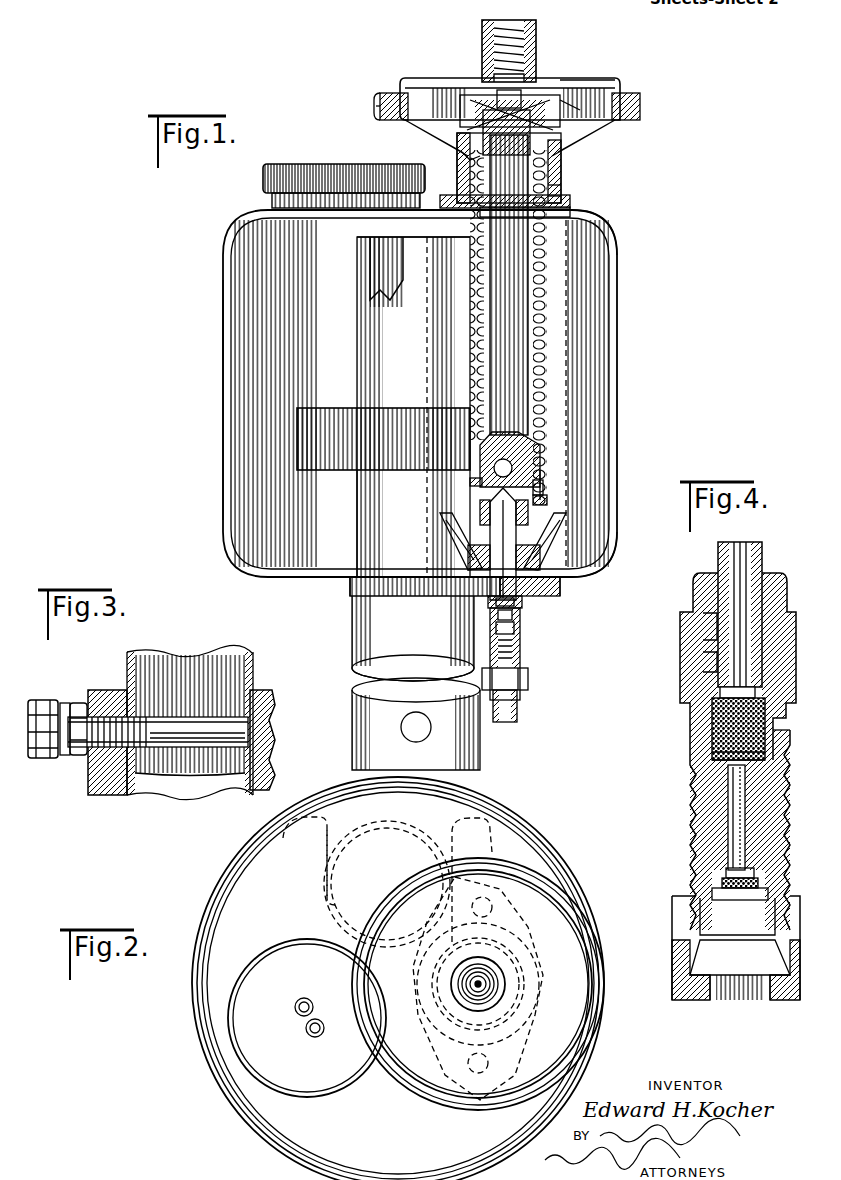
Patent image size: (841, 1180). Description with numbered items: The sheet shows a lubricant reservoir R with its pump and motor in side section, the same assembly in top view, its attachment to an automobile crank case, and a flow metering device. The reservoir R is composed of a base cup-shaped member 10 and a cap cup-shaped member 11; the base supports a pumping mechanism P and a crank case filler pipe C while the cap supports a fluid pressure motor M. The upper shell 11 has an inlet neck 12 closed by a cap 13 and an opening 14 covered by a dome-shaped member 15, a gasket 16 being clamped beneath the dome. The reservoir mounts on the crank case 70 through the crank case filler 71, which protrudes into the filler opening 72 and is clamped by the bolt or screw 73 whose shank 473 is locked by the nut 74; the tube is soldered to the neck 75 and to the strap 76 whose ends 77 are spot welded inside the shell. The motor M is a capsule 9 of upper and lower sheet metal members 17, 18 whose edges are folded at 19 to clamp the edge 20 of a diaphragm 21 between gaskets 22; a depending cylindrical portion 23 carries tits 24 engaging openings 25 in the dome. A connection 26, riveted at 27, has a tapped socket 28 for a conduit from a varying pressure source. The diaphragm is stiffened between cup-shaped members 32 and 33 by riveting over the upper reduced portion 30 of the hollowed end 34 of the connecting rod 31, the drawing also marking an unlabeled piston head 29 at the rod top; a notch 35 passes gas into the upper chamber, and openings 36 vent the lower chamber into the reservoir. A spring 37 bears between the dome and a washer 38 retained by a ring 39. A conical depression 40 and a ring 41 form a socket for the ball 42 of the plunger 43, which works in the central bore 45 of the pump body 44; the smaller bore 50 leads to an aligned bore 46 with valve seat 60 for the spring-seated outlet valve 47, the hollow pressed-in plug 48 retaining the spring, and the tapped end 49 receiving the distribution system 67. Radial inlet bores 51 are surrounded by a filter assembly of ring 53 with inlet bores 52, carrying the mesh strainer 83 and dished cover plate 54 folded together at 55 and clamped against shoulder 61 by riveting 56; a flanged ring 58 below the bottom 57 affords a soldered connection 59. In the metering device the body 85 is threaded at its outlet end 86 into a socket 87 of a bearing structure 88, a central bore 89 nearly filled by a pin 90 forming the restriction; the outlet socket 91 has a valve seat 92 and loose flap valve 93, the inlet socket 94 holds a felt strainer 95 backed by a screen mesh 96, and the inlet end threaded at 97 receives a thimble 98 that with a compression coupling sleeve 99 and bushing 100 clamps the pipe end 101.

In FIG. 1, the capsule 9 is at (642, 112).
In FIG. 1, the base cup-shaped member 10 is at (222, 492).
In FIG. 1, the cap cup-shaped member 11 is at (228, 270).
In FIG. 1, the inlet neck 12 is at (272, 198).
In FIG. 1, the cap 13 is at (312, 166).
In FIG. 2, the cap 13 is at (245, 1043).
In FIG. 1, the opening 14 is at (586, 222).
In FIG. 1, the dome-shaped member 15 is at (572, 204).
In FIG. 1, the gasket 16 is at (462, 212).
In FIG. 1, the upper sheet metal member 17 is at (600, 102).
In FIG. 2, the upper sheet metal member 17 is at (547, 930).
In FIG. 1, the lower sheet metal member 18 is at (592, 134).
In FIG. 1, the folded edges 19 is at (392, 92).
In FIG. 1, the diaphragm edge 20 is at (380, 106).
In FIG. 1, the diaphragm 21 is at (448, 100).
In FIG. 1, the gaskets 22 is at (384, 98).
In FIG. 1, the depending cylindrical portion 23 is at (566, 197).
In FIG. 1, the tits 24 is at (563, 170).
In FIG. 1, the openings 25 is at (563, 185).
In FIG. 1, the connection 26 is at (482, 48).
In FIG. 2, the connection 26 is at (490, 1003).
In FIG. 1, the riveting 27 is at (530, 120).
In FIG. 1, the tapped socket 28 is at (482, 29).
In FIG. 1, the piston head 29 is at (510, 150).
In FIG. 1, the upper reduced portion 30 is at (560, 116).
In FIG. 1, the connecting rod 31 is at (500, 296).
In FIG. 1, the upwardly facing cup-shaped member 32 is at (438, 122).
In FIG. 1, the downwardly facing cup-shaped member 33 is at (468, 142).
In FIG. 1, the hollowed end 34 is at (536, 122).
In FIG. 1, the notch 35 is at (500, 108).
In FIG. 1, the openings 36 is at (468, 160).
In FIG. 1, the spring 37 is at (476, 346).
In FIG. 1, the washer 38 is at (546, 500).
In FIG. 1, the ring 39 is at (532, 504).
In FIG. 1, the conical depression 40 is at (512, 467).
In FIG. 1, the ring 41 is at (480, 481).
In FIG. 1, the ball 42 is at (522, 450).
In FIG. 1, the plunger 43 is at (492, 500).
In FIG. 1, the pump body 44 is at (542, 556).
In FIG. 1, the central bore 45 is at (521, 614).
In FIG. 1, the aligned bore 46 is at (521, 630).
In FIG. 1, the spring-seated outlet valve 47 is at (500, 624).
In FIG. 1, the hollow pressed-in plug 48 is at (521, 648).
In FIG. 1, the tapped end 49 is at (522, 668).
In FIG. 1, the smaller bore 50 is at (440, 598).
In FIG. 1, the radial inlet bores 51 is at (470, 584).
In FIG. 1, the inlet bores 52 is at (470, 556).
In FIG. 1, the ring 53 is at (546, 540).
In FIG. 1, the upwardly dished cover plate 54 is at (455, 522).
In FIG. 1, the folded outer edges 55 is at (480, 512).
In FIG. 1, the riveting 56 is at (560, 520).
In FIG. 1, the bottom 57 is at (598, 573).
In FIG. 1, the flanged ring 58 is at (552, 592).
In FIG. 1, the soldered connection 59 is at (548, 582).
In FIG. 1, the valve seat 60 is at (488, 604).
In FIG. 1, the shoulder 61 is at (524, 600).
In FIG. 1, the distribution system 67 is at (512, 706).
In FIG. 3, the crank case 70 is at (273, 716).
In FIG. 1, the crank case filler 71 is at (352, 721).
In FIG. 3, the crank case filler 71 is at (250, 667).
In FIG. 3, the crank case filler opening 72 is at (124, 796).
In FIG. 3, the bolt or screw 73 is at (100, 780).
In FIG. 3, the nut 74 is at (66, 762).
In FIG. 1, the neck 75 is at (350, 592).
In FIG. 1, the strap 76 is at (431, 412).
In FIG. 2, the strap 76 is at (322, 887).
In FIG. 1, the strap ends 77 is at (330, 414).
In FIG. 2, the strap ends 77 is at (296, 828).
In FIG. 1, the annular cup-shaped metallic mesh strainer 83 is at (462, 540).
In FIG. 4, the body 85 is at (692, 794).
In FIG. 4, the outlet end 86 is at (700, 866).
In FIG. 4, the socket 87 is at (690, 920).
In FIG. 4, the mounting or bearing structure 88 is at (700, 968).
In FIG. 4, the central bore 89 is at (728, 812).
In FIG. 4, the pin 90 is at (728, 838).
In FIG. 4, the outlet socket 91 is at (742, 902).
In FIG. 4, the valve seat 92 is at (708, 890).
In FIG. 4, the loose flap valve 93 is at (728, 902).
In FIG. 4, the inlet socket 94 is at (712, 722).
In FIG. 4, the felt strainer 95 is at (712, 745).
In FIG. 4, the screen mesh 96 is at (712, 768).
In FIG. 4, the threaded inlet end 97 is at (718, 692).
In FIG. 4, the thimble 98 is at (708, 573).
In FIG. 4, the compression coupling sleeve 99 is at (710, 628).
In FIG. 4, the bushing 100 is at (706, 663).
In FIG. 4, the pipe end 101 is at (753, 573).
In FIG. 3, the extension or shank 473 is at (205, 748).
In FIG. 1, the reservoir R is at (222, 333).
In FIG. 2, the reservoir R is at (193, 1035).
In FIG. 1, the crank case filler pipe C is at (354, 508).
In FIG. 2, the crank case filler pipe C is at (330, 903).
In FIG. 1, the fluid pressure motor M is at (595, 80).
In FIG. 2, the fluid pressure motor M is at (608, 1021).
In FIG. 1, the pumping mechanism P is at (542, 488).